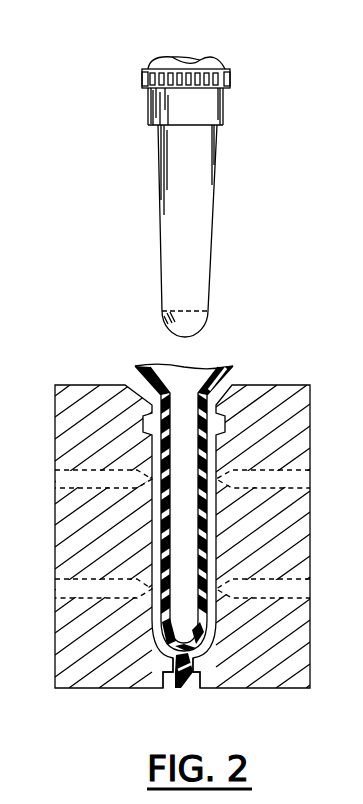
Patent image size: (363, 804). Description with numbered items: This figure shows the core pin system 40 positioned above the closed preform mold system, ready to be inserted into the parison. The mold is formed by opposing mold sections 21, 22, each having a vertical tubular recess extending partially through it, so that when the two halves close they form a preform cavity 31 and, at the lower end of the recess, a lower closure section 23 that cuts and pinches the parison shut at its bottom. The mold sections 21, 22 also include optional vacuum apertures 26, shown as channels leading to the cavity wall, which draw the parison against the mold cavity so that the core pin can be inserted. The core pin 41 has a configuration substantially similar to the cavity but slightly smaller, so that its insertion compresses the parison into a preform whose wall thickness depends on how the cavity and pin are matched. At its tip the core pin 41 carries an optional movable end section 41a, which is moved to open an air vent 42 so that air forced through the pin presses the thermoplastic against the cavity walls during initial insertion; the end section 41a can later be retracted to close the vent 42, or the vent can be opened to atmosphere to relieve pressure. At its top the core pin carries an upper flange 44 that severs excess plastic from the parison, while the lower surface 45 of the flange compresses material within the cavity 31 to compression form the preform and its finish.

The core pin system 40 is at (262, 85).
The core pin 41 is at (190, 232).
The movable end section 41a is at (165, 326).
The air vent 42 is at (208, 311).
The upper flange 44 is at (180, 107).
The lower surface of the flange 45 is at (222, 125).
The mold section 21 is at (82, 663).
The mold section 22 is at (277, 647).
The lower closure section 23 is at (188, 687).
The vacuum apertures 26 is at (300, 482).
The preform cavity 31 is at (162, 617).